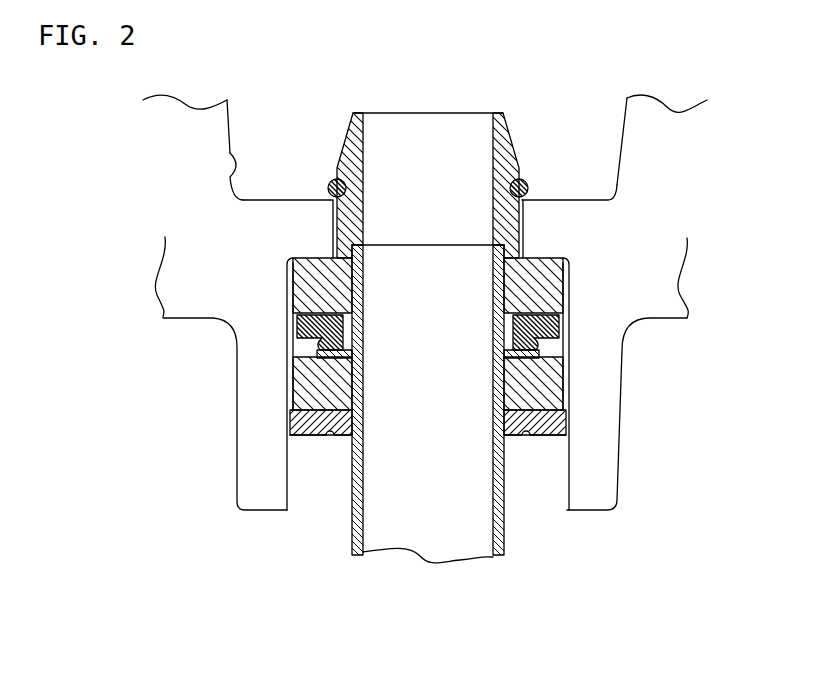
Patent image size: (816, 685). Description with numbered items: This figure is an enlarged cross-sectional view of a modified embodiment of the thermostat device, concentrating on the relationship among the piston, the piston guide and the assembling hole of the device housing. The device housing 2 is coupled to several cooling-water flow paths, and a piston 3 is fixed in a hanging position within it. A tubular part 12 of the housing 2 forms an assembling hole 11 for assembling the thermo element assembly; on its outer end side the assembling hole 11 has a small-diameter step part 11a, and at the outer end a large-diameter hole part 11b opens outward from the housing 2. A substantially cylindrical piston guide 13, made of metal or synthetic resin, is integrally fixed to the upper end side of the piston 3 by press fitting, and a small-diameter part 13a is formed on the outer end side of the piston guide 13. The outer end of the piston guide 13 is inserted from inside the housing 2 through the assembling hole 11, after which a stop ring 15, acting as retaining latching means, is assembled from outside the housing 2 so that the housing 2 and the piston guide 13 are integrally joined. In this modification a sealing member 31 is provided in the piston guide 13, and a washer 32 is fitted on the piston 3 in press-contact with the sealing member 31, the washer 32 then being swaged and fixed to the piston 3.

The device housing 2 is at (162, 165).
The piston 3 is at (458, 533).
The assembling hole 11 is at (567, 315).
The small-diameter step part 11a is at (312, 227).
The large-diameter hole part 11b is at (227, 152).
The tubular part 12 is at (245, 477).
The piston guide 13 is at (307, 283).
The small-diameter part 13a is at (500, 135).
The stop ring 15 is at (527, 185).
The sealing member 31 is at (547, 395).
The washer 32 is at (565, 428).